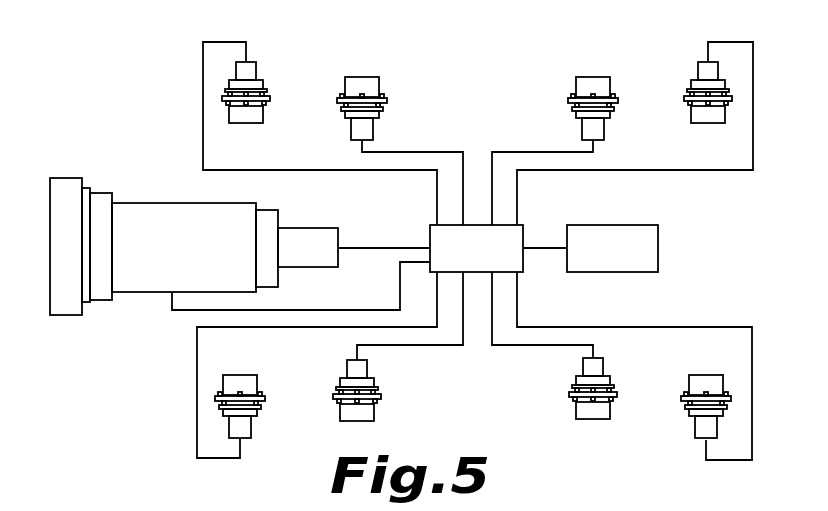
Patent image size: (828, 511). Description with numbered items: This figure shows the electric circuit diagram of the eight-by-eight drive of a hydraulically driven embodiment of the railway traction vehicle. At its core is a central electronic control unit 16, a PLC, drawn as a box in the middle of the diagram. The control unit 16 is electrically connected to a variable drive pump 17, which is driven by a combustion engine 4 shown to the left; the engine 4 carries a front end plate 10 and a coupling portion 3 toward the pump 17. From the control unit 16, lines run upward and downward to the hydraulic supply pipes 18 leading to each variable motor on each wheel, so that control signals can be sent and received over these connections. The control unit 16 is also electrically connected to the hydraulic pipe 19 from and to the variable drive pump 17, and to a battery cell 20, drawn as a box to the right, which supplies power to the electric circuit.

The mounting flange / end plate 10 is at (60, 193).
The combustion engine 4 is at (145, 215).
The coupling element 3 is at (272, 282).
The variable drive pump 17 is at (333, 267).
The hydraulic pipe 19 is at (400, 270).
The central electronic control unit 16 is at (478, 243).
The hydraulic supply pipes 18 is at (564, 152).
The battery cell 20 is at (633, 245).